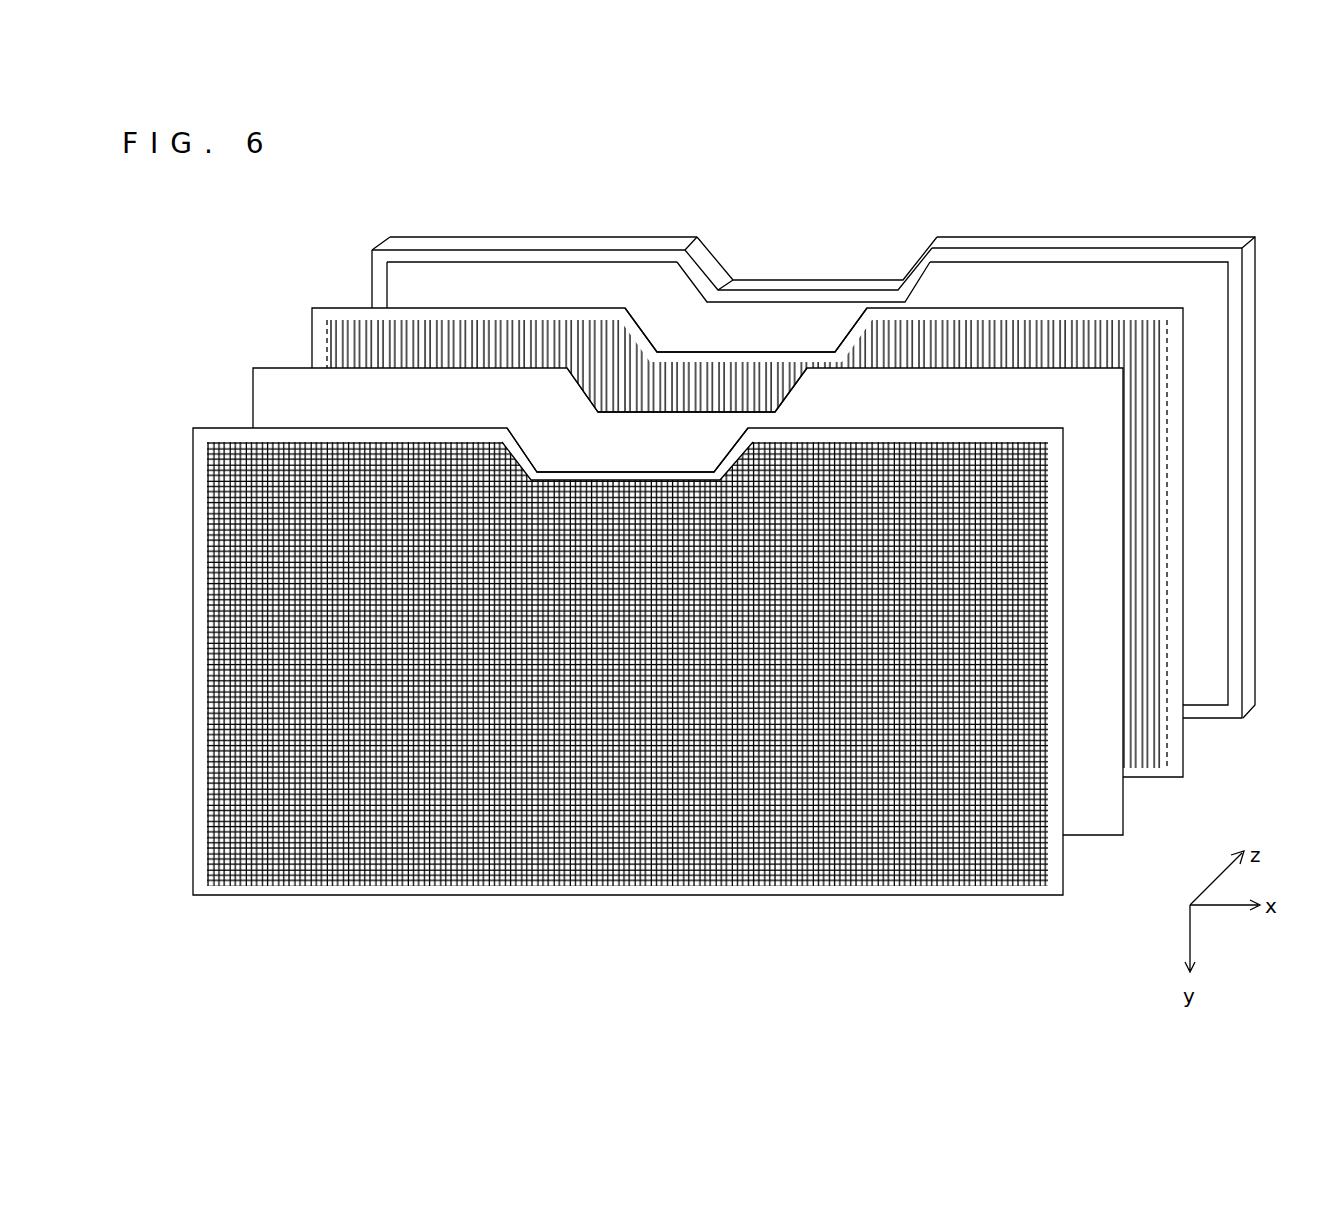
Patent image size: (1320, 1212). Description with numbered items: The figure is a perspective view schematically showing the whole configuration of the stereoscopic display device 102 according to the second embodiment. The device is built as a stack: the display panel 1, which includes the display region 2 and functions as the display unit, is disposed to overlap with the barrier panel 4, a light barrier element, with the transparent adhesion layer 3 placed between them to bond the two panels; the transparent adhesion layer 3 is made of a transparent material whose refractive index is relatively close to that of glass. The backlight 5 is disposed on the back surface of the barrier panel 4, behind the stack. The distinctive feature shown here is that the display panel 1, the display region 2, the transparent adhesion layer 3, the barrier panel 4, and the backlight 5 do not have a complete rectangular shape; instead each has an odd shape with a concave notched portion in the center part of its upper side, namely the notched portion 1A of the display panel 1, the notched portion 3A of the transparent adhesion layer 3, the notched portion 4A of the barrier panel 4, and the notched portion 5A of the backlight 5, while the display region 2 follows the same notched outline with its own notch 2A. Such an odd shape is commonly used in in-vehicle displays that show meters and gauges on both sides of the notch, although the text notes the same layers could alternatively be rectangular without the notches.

The stereoscopic display device 102 is at (496, 189).
The display panel 1 is at (207, 428).
The notched portion 1A is at (655, 470).
The display region 2 is at (205, 695).
The notch of mesh electrode layer 2A is at (558, 473).
The transparent adhesion layer 3 is at (280, 368).
The notched portion 3A is at (722, 411).
The barrier panel 4 is at (343, 309).
The notched portion 4A is at (628, 335).
The backlight 5 is at (393, 244).
The notched portion 5A is at (853, 280).